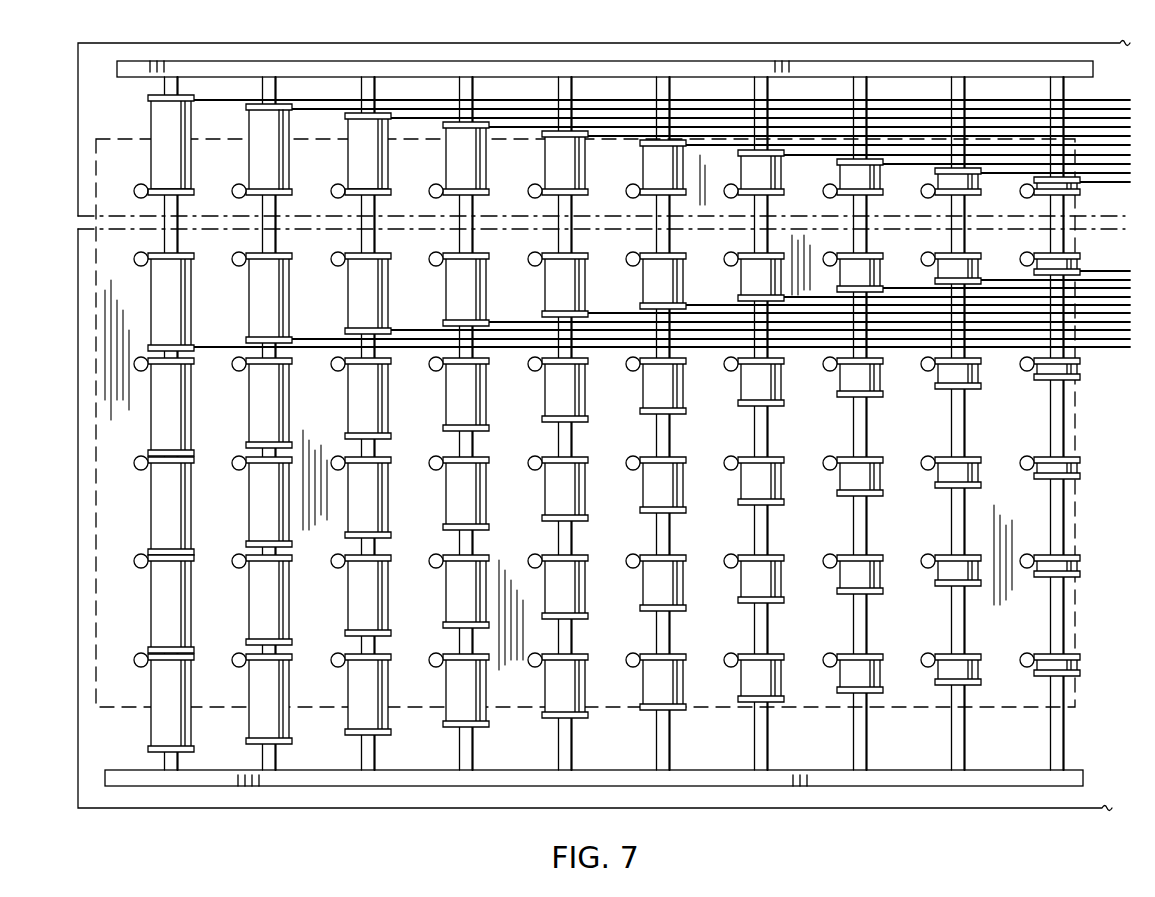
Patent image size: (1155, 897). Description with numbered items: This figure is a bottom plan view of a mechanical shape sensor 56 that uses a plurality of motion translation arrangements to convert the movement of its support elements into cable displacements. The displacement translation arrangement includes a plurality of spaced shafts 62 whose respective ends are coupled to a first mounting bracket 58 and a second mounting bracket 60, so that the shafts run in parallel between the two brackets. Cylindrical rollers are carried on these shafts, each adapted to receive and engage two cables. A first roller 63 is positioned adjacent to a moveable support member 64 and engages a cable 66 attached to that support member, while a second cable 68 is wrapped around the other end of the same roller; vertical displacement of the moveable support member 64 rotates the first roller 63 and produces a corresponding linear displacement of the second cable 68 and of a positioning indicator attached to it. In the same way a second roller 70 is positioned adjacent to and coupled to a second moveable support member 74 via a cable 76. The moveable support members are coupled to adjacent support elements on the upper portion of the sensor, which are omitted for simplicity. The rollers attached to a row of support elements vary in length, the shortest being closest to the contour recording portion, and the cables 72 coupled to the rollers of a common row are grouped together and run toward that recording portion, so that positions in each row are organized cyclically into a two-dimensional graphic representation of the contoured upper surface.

The housing frame 56 is at (78, 272).
The first mounting bracket 58 is at (203, 65).
The second mounting bracket 60 is at (222, 777).
The spaced shafts 62 is at (160, 753).
The first roller 63 is at (160, 118).
The moveable support member 64 is at (134, 190).
The cable 66 is at (197, 192).
The second cable 68 is at (247, 101).
The second roller 70 is at (282, 160).
The tubing lines 72 is at (330, 110).
The second moveable support member 74 is at (333, 189).
The cable 76 is at (389, 188).